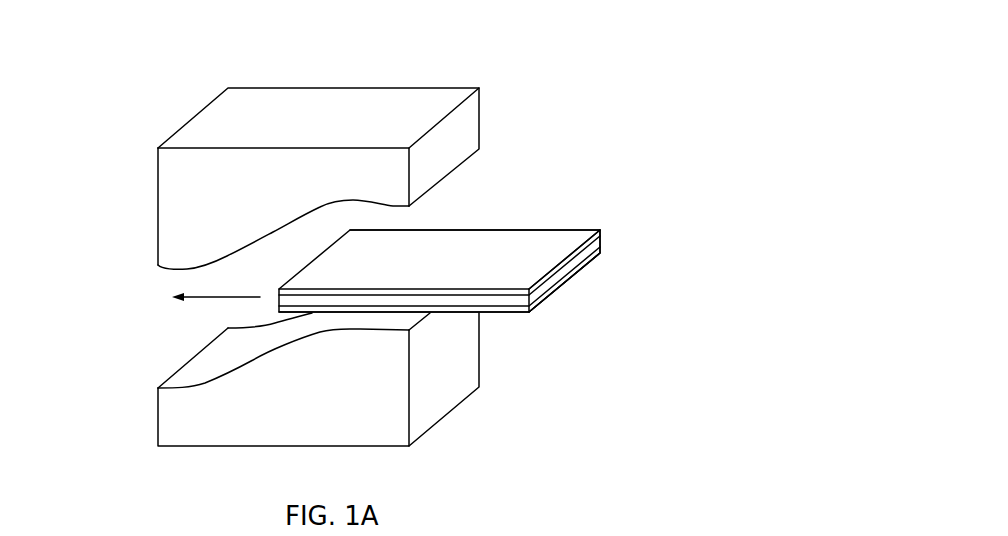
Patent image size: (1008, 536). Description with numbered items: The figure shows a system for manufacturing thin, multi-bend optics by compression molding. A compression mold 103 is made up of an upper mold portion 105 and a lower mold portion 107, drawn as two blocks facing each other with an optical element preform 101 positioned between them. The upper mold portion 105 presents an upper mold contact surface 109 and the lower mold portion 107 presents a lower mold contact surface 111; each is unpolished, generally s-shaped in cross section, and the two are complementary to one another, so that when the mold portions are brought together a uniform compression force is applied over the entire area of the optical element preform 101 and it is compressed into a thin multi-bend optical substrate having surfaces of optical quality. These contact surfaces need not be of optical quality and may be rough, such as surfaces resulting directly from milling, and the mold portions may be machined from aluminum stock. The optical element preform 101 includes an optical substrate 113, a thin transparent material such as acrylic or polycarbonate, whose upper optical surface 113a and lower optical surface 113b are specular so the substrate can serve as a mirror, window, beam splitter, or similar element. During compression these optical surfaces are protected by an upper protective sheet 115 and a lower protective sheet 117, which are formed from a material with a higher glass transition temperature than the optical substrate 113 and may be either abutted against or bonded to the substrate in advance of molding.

The optical element preform 101 is at (640, 142).
The compression mold 103 is at (178, 88).
The upper mold portion 105 is at (158, 203).
The lower mold portion 107 is at (158, 425).
The upper mold contact surface 109 is at (168, 268).
The lower mold contact surface 111 is at (220, 360).
The optical substrate 113 is at (510, 300).
The upper optical surface 113a is at (450, 292).
The lower optical surface 113b is at (458, 308).
The upper protective sheet 115 is at (600, 230).
The lower protective sheet 117 is at (565, 287).